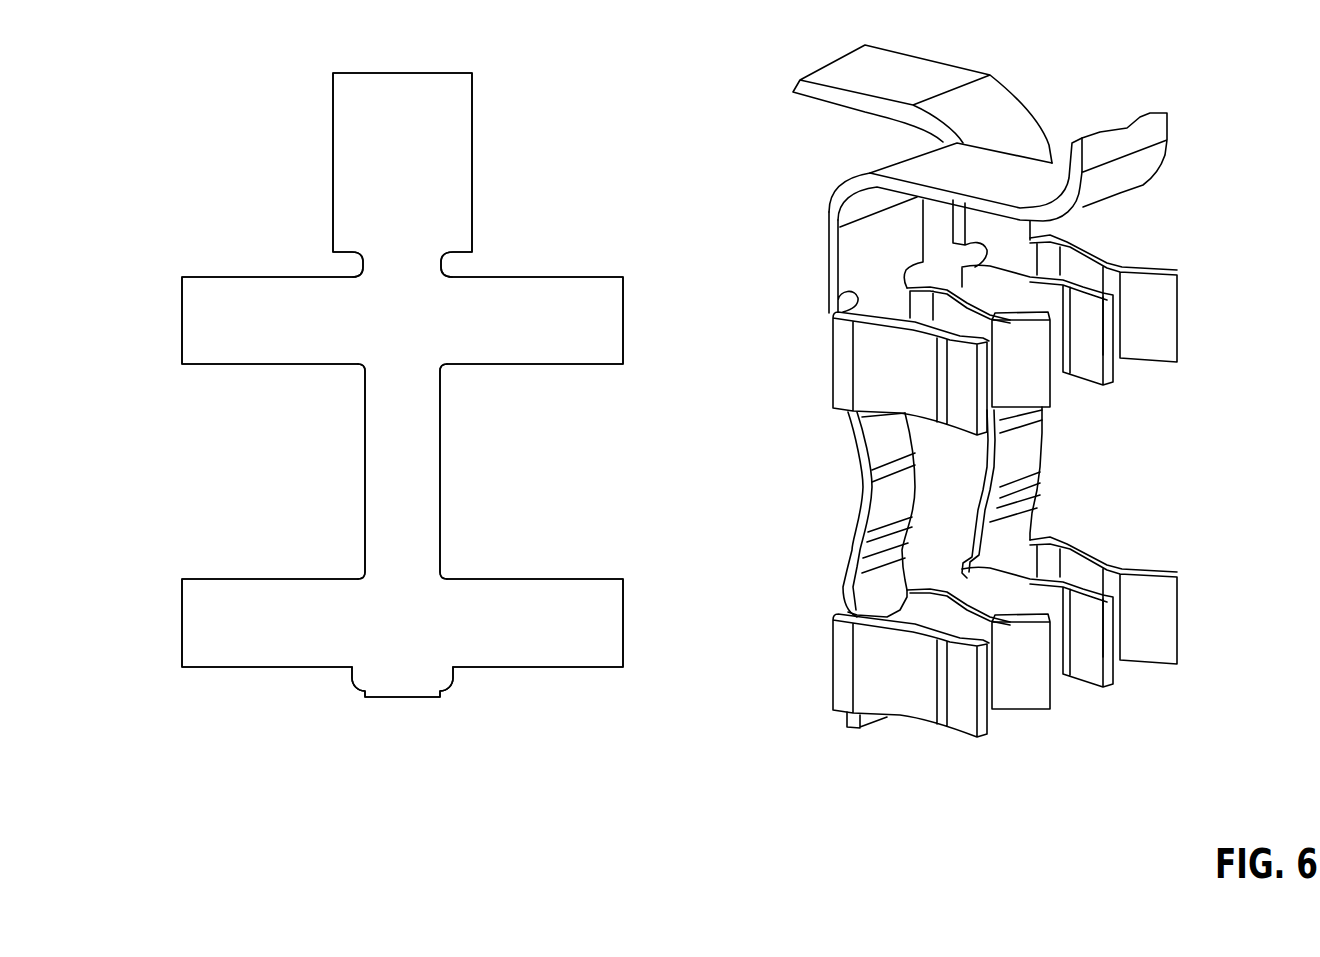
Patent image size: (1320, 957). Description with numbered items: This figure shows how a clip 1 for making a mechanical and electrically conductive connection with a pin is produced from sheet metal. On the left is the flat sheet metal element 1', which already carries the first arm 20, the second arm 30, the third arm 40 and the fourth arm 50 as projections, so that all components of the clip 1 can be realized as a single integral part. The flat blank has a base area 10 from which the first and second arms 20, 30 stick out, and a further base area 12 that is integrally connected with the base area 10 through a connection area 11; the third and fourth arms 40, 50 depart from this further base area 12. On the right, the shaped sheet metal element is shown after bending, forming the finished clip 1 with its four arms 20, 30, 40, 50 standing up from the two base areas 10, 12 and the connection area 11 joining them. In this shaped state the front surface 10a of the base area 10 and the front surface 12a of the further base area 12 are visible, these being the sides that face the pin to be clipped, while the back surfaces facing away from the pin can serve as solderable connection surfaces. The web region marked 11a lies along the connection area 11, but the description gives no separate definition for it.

The clip 1 is at (945, 311).
The sheet metal element 1' is at (402, 385).
The base area 10 is at (399, 657).
The front surface 10a is at (890, 608).
The connection area 11 is at (455, 459).
The bead of the web 11a is at (890, 490).
The further base area 12 is at (427, 337).
The front surface 12a is at (883, 310).
The first arm 20 is at (238, 668).
The second arm 30 is at (566, 668).
The third arm 40 is at (236, 272).
The fourth arm 50 is at (569, 275).